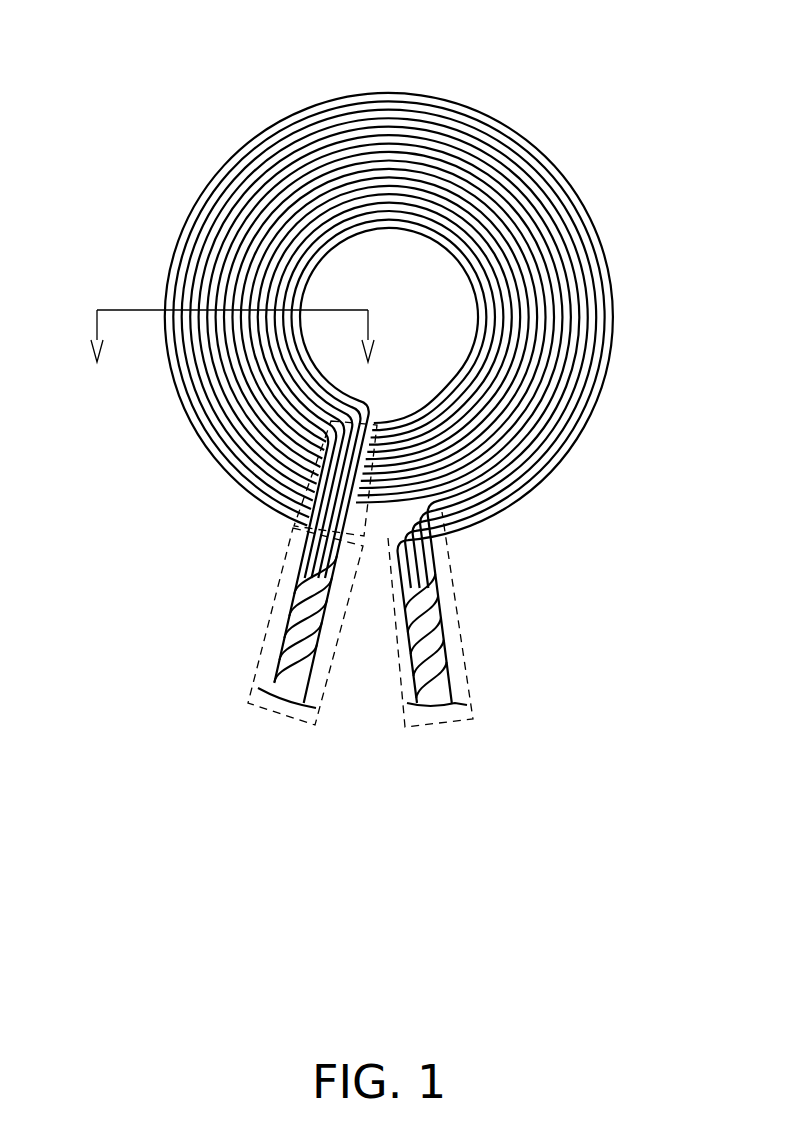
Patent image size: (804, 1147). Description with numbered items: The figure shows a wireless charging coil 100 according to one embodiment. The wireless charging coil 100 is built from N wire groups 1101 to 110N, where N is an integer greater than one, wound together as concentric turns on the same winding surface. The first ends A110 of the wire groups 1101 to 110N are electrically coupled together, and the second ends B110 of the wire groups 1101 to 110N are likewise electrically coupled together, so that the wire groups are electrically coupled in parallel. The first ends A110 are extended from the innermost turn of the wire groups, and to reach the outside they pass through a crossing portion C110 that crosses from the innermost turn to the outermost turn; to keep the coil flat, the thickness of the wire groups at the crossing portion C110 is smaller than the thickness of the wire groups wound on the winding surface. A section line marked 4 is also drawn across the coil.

The wireless charging coil 100 is at (603, 85).
The wire group 1101 is at (597, 405).
The wire group 110N is at (513, 480).
The crossing portion C110 is at (292, 482).
The first ends A110 is at (281, 717).
The second ends B110 is at (448, 722).
The section line 4-4' 4 is at (234, 345).